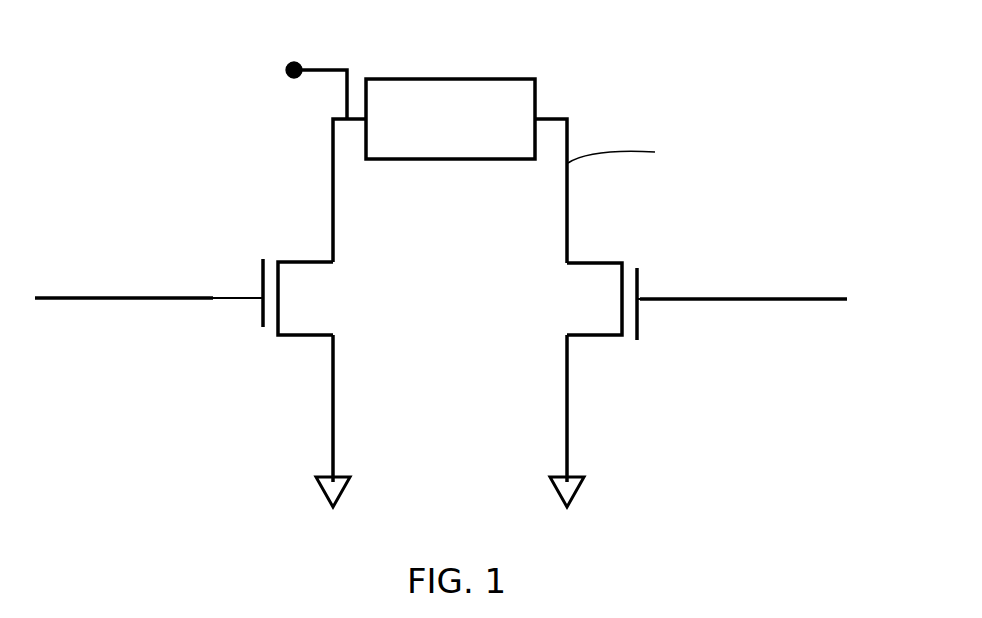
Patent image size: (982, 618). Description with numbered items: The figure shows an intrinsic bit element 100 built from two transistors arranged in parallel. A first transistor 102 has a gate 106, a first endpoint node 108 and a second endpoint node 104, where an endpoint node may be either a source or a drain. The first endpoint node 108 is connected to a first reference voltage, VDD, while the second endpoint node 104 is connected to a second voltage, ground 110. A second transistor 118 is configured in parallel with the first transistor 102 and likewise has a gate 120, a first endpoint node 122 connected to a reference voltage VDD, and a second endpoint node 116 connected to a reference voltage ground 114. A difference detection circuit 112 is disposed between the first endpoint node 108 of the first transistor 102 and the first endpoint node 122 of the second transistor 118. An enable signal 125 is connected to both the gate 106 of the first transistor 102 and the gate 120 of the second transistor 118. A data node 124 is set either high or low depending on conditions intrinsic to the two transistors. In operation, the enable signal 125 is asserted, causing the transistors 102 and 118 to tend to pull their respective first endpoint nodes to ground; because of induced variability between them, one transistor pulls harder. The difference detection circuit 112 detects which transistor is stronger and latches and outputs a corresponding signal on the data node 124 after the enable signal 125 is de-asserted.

The intrinsic bit element 100 is at (132, 100).
The first transistor 102 is at (305, 252).
The second endpoint node 104 is at (333, 462).
The gate 106 is at (237, 300).
The first endpoint node 108 is at (333, 140).
The second voltage (ground) 110 is at (325, 480).
The difference detection circuit 112 is at (452, 93).
The reference voltage ground 114 is at (570, 485).
The second endpoint node 116 is at (568, 452).
The second transistor 118 is at (652, 288).
The gate 120 is at (673, 302).
The first endpoint node 122 is at (568, 135).
The data node 124 is at (294, 62).
The enable signal 125 is at (156, 298).